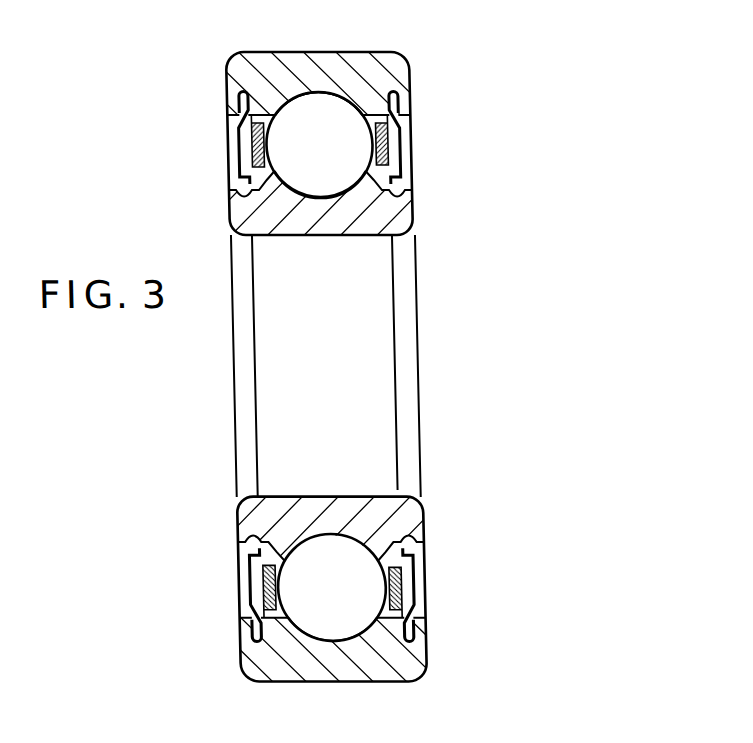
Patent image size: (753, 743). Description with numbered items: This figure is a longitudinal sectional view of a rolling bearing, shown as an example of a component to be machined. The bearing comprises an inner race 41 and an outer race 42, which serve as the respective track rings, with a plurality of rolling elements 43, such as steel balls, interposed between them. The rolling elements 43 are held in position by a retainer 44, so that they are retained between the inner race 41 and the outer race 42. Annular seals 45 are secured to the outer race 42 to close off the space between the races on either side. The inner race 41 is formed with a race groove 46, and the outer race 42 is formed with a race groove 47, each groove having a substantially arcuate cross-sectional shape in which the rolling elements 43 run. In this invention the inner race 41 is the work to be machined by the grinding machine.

The inner race 41 is at (392, 209).
The outer race 42 is at (387, 73).
The rolling elements 43 is at (388, 134).
The retainer 44 is at (353, 142).
The annular seals 45 is at (404, 166).
The race groove 46 is at (327, 199).
The race groove 47 is at (327, 90).